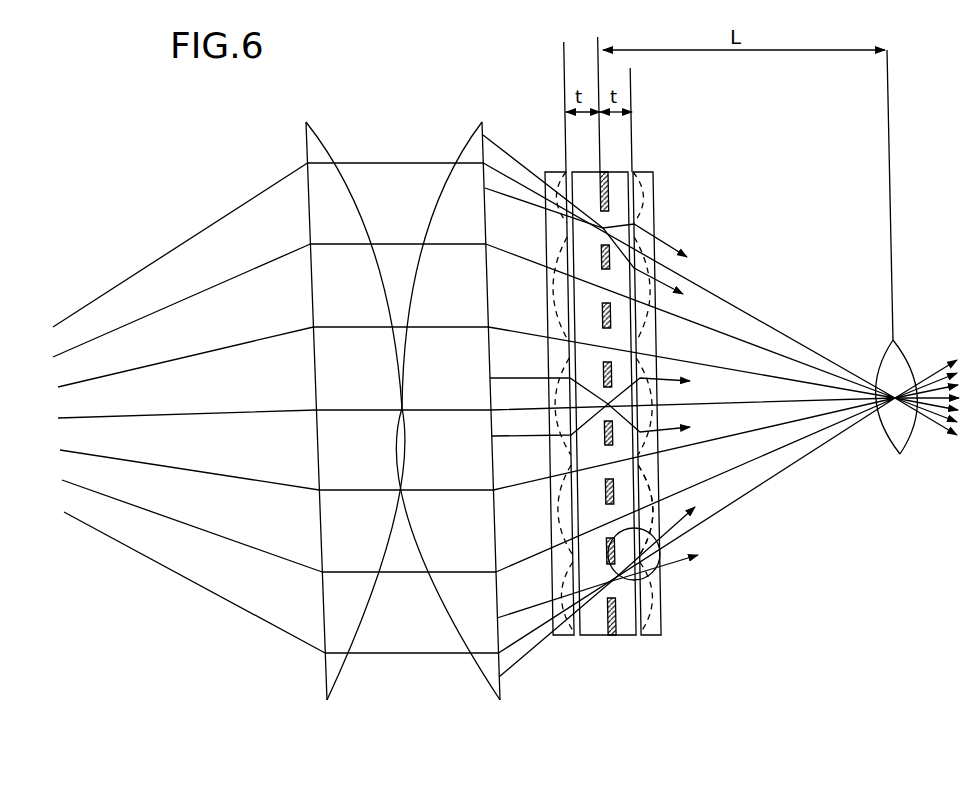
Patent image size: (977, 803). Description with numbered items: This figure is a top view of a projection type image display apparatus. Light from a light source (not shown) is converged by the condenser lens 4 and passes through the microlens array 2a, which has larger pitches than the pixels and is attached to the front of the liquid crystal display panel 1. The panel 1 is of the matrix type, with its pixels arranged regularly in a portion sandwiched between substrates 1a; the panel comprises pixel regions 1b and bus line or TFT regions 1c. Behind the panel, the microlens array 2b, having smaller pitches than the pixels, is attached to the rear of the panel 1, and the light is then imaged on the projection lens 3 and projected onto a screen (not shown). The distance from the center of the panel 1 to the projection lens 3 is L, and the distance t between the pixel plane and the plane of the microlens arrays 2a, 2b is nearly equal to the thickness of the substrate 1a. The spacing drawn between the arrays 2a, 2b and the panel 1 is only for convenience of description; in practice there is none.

The liquid crystal display panel 1 is at (655, 735).
The substrate 1a is at (602, 637).
The pixel region 1b is at (667, 541).
The bus line or TFT region 1c is at (662, 567).
The microlens array 2a is at (558, 637).
The microlens array 2b is at (661, 637).
The projection lens 3 is at (900, 455).
The condenser lens 4 is at (325, 728).